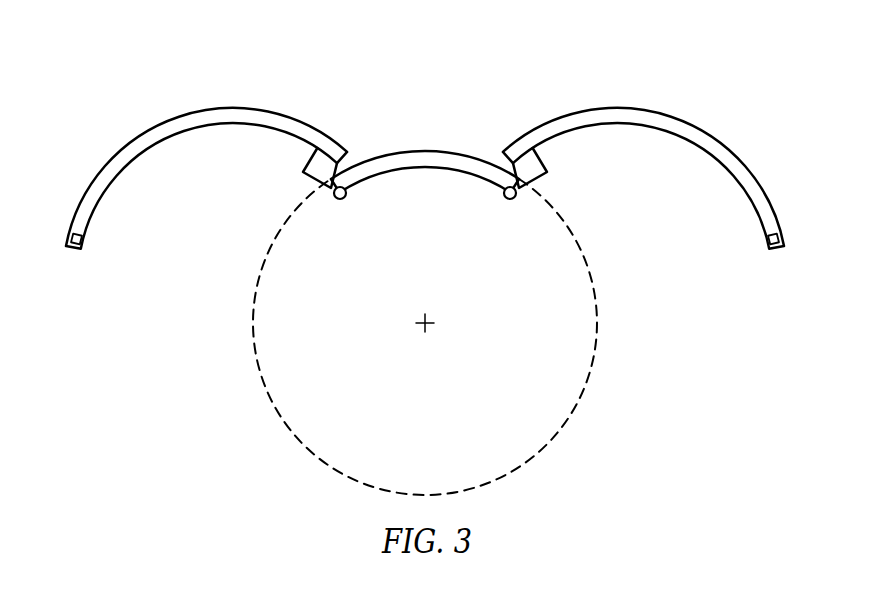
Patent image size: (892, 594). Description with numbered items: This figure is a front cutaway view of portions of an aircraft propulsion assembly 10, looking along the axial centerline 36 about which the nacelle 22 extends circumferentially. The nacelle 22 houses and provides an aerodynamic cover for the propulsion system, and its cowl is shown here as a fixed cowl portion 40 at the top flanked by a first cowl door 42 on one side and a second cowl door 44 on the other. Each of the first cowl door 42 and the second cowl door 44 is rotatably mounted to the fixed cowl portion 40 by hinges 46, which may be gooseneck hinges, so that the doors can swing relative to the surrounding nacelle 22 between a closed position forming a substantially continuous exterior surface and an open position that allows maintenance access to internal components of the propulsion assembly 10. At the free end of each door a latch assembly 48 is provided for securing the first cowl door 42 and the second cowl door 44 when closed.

The propulsion assembly 10 is at (425, 259).
The nacelle 22 is at (424, 259).
The axial centerline 36 is at (429, 327).
The fixed cowl portion 40 is at (428, 160).
The first cowl door 42 is at (696, 146).
The second cowl door 44 is at (152, 146).
The hinges 46 is at (308, 177).
The latch assembly 48 is at (75, 249).